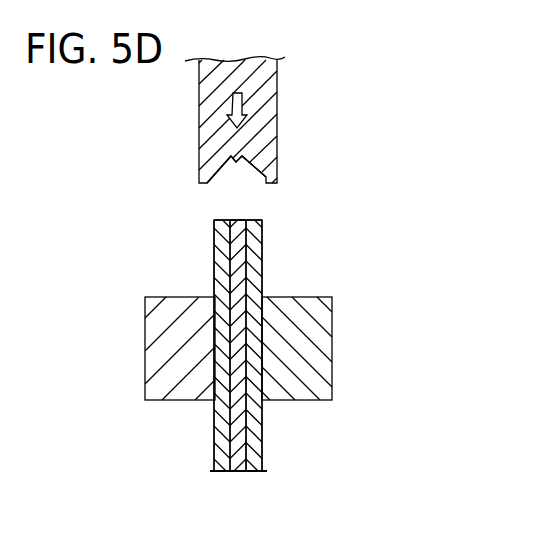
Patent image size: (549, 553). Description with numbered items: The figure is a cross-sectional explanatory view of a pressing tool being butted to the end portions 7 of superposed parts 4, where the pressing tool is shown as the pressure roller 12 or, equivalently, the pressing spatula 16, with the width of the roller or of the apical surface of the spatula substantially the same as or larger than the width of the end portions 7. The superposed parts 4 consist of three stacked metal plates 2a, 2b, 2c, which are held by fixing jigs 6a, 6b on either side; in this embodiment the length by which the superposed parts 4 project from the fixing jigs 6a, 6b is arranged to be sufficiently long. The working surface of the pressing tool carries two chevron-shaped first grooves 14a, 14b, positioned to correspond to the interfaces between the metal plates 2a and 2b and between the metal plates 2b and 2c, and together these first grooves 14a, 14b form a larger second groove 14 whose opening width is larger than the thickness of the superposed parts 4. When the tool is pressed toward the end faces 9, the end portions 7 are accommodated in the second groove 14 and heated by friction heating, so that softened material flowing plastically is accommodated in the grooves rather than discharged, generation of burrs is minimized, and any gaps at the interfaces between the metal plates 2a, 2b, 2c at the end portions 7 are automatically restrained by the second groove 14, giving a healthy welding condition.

The pressure roller 12 is at (302, 118).
The pressing spatula 16 is at (283, 87).
The second groove 14 is at (266, 178).
The first groove 14a is at (228, 161).
The first groove 14b is at (243, 166).
The end portions 7 is at (269, 217).
The end faces 9 is at (243, 218).
The superposed parts 4 is at (269, 352).
The metal plate 2a is at (222, 419).
The metal plate 2b is at (238, 460).
The metal plate 2c is at (253, 442).
The fixing jig 6a is at (170, 352).
The fixing jig 6b is at (310, 353).